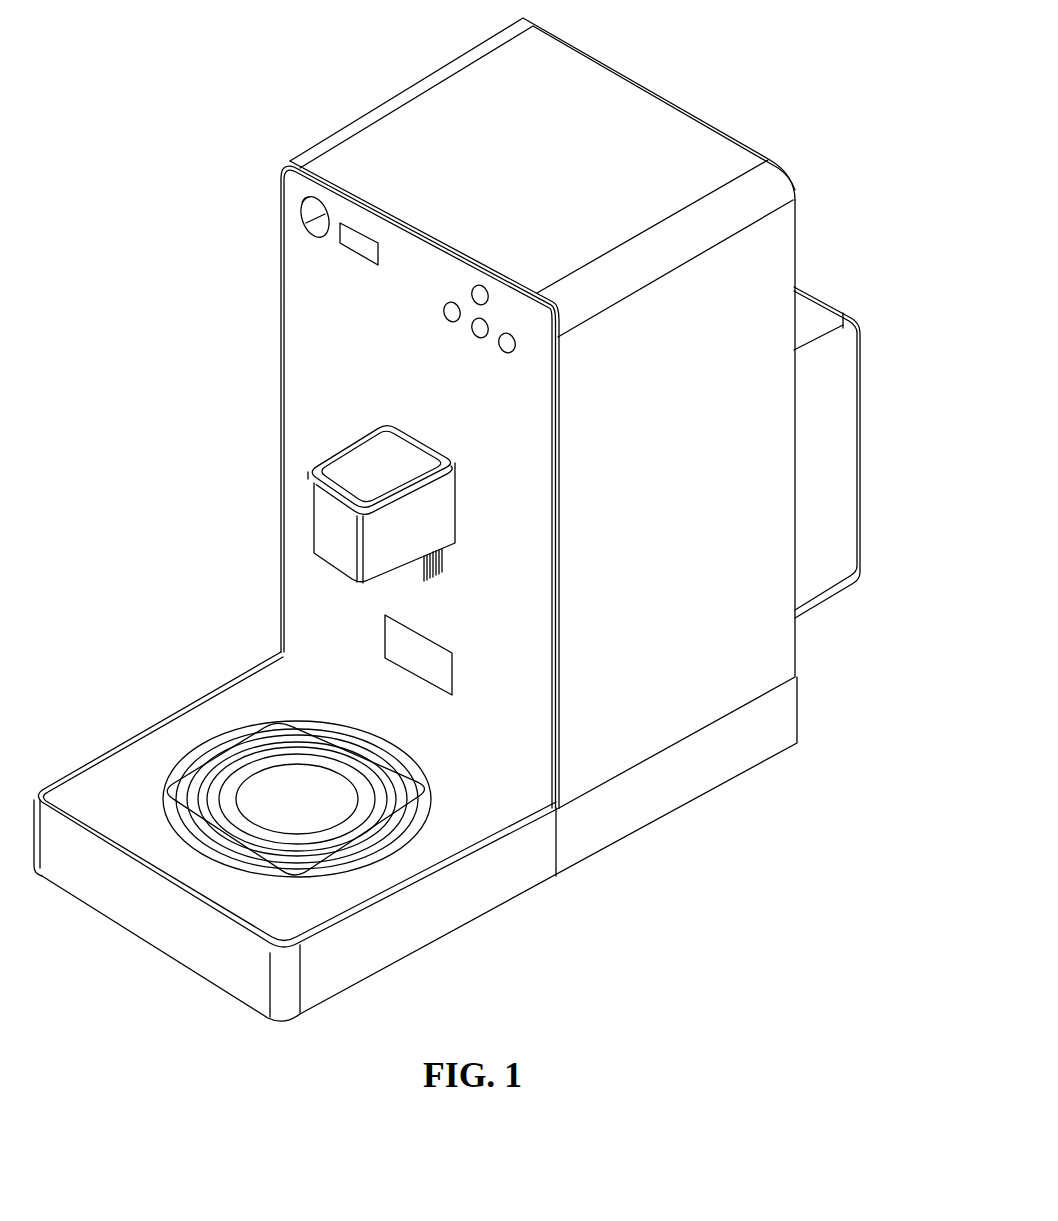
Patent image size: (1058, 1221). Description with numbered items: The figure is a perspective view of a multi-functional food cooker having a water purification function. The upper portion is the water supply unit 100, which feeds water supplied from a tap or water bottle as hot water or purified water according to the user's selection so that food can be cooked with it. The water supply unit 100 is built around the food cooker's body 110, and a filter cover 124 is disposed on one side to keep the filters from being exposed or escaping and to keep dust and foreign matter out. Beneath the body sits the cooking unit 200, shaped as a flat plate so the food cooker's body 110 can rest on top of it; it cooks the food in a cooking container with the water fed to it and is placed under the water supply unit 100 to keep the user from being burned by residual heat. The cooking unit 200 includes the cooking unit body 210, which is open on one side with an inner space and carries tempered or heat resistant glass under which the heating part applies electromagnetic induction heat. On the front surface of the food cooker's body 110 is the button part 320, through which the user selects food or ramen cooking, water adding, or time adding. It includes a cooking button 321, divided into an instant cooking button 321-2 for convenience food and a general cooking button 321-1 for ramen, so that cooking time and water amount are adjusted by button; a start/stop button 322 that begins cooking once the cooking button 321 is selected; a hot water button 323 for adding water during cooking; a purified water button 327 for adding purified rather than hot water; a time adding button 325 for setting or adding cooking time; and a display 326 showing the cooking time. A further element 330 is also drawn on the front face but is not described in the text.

The water supply unit 100 is at (312, 516).
The food cooker's body 110 is at (771, 242).
The filter cover 124 is at (843, 347).
The cooking unit 200 is at (98, 727).
The cooking unit body 210 is at (457, 908).
The button part 320 is at (412, 247).
The cooking button 321 is at (301, 209).
The general cooking button 321-1 is at (306, 222).
The instant cooking button 321-2 is at (303, 200).
The start/stop button 322 is at (452, 312).
The hot water button 323 is at (479, 328).
The time adding button 325 is at (507, 344).
The display 326 is at (356, 242).
The purified water button 327 is at (476, 290).
The indicator window 330 is at (397, 638).